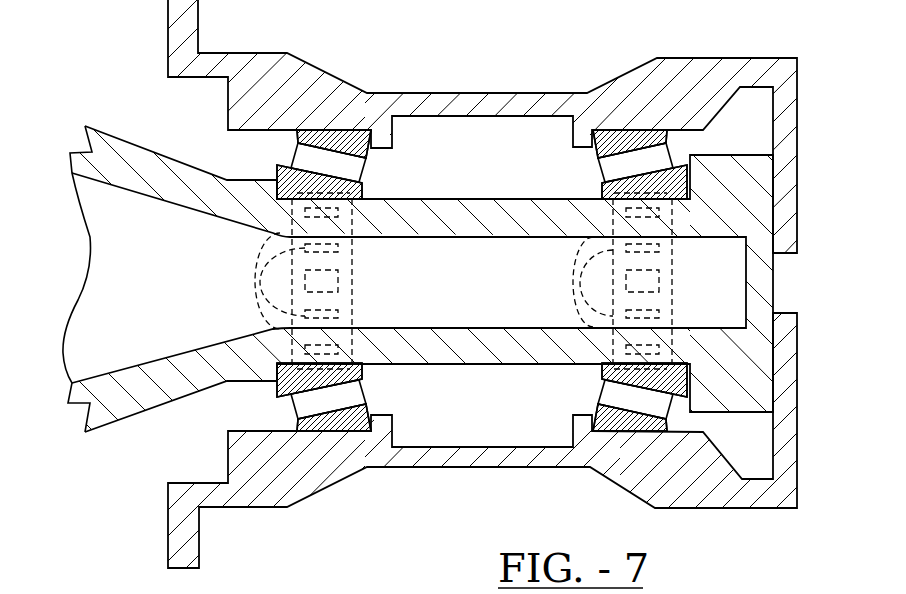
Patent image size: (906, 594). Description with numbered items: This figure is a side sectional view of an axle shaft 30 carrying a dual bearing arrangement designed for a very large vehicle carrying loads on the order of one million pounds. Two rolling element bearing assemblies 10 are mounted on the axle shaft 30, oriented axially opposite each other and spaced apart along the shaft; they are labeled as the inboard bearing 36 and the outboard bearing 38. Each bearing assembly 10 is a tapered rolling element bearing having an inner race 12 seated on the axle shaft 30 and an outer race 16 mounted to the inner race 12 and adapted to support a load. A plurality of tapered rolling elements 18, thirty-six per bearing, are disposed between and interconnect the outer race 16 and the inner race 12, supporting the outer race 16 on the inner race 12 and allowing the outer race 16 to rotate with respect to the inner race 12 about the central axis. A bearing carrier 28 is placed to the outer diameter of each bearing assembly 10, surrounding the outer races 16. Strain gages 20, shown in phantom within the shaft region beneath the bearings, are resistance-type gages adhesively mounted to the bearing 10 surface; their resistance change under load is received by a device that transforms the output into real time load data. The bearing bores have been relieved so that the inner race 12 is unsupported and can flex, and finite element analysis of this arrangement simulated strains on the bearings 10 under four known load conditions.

The bearing assembly 10 is at (421, 280).
The inner race 12 is at (368, 192).
The outer race 16 is at (662, 133).
The rolling elements 18 is at (371, 160).
The strain gages 20 is at (248, 281).
The bearing carrier 28 is at (295, 92).
The axle shaft 30 is at (132, 418).
The inboard bearing 36 is at (283, 149).
The outboard bearing 38 is at (585, 177).